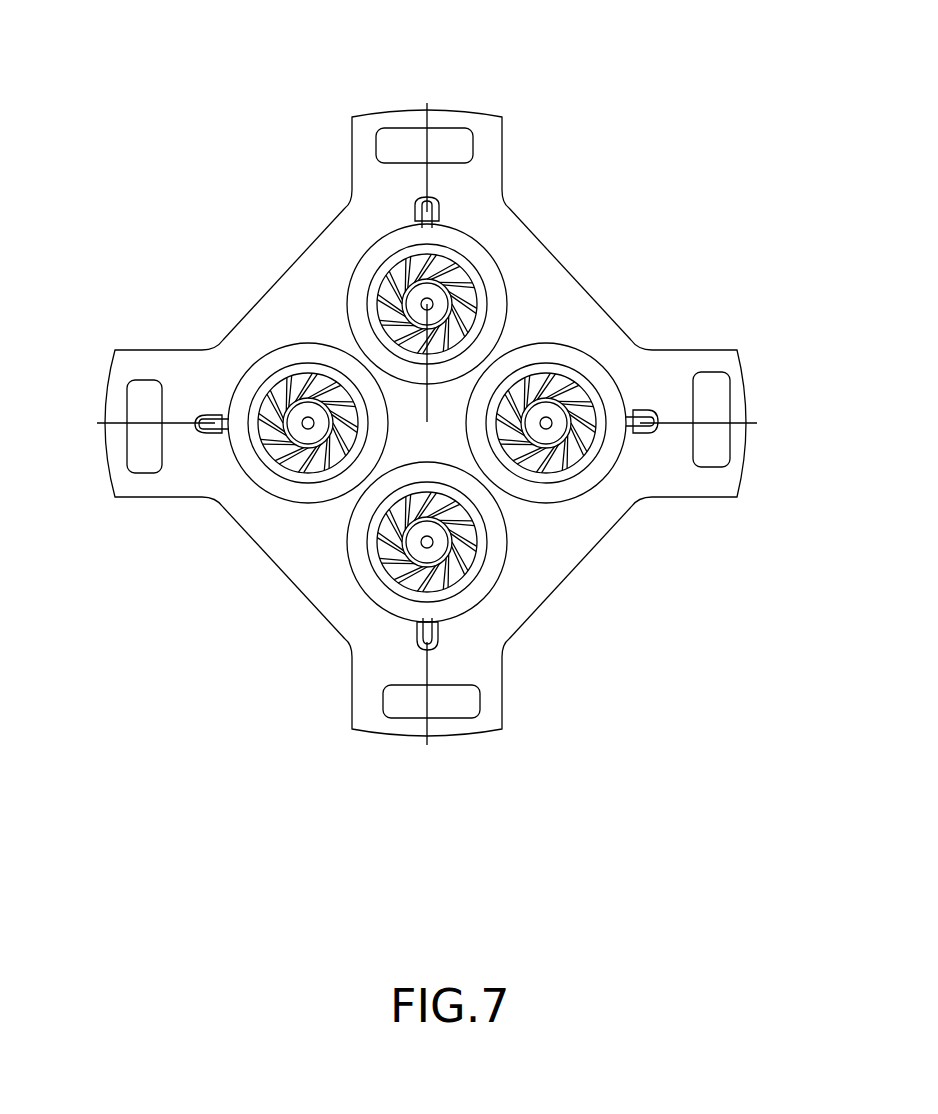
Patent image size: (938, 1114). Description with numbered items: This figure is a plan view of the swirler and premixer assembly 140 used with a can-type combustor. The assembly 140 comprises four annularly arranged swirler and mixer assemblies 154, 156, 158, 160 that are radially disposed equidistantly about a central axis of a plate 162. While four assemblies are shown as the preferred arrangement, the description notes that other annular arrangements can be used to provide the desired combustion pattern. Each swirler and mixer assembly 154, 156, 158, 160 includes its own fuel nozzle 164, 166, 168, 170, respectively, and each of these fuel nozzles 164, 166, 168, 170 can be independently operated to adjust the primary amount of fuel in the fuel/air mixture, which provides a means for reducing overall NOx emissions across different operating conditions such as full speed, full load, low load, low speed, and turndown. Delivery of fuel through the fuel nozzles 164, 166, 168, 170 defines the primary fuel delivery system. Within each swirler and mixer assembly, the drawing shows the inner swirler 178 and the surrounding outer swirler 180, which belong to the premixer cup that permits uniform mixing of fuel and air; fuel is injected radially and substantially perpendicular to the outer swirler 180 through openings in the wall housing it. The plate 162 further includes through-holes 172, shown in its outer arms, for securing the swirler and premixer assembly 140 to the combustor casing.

The swirler and premixer assembly 140 is at (203, 54).
The swirler and mixer assembly 154 is at (567, 500).
The swirler and mixer assembly 156 is at (354, 636).
The swirler and mixer assembly 158 is at (497, 248).
The swirler and mixer assembly 160 is at (214, 350).
The plate 162 is at (545, 590).
The fuel nozzle 164 is at (645, 402).
The fuel nozzle 166 is at (439, 637).
The fuel nozzle 168 is at (415, 210).
The fuel nozzle 170 is at (250, 505).
The through-holes 172 is at (452, 148).
The inner swirler 178 is at (280, 369).
The outer swirler 180 is at (294, 351).